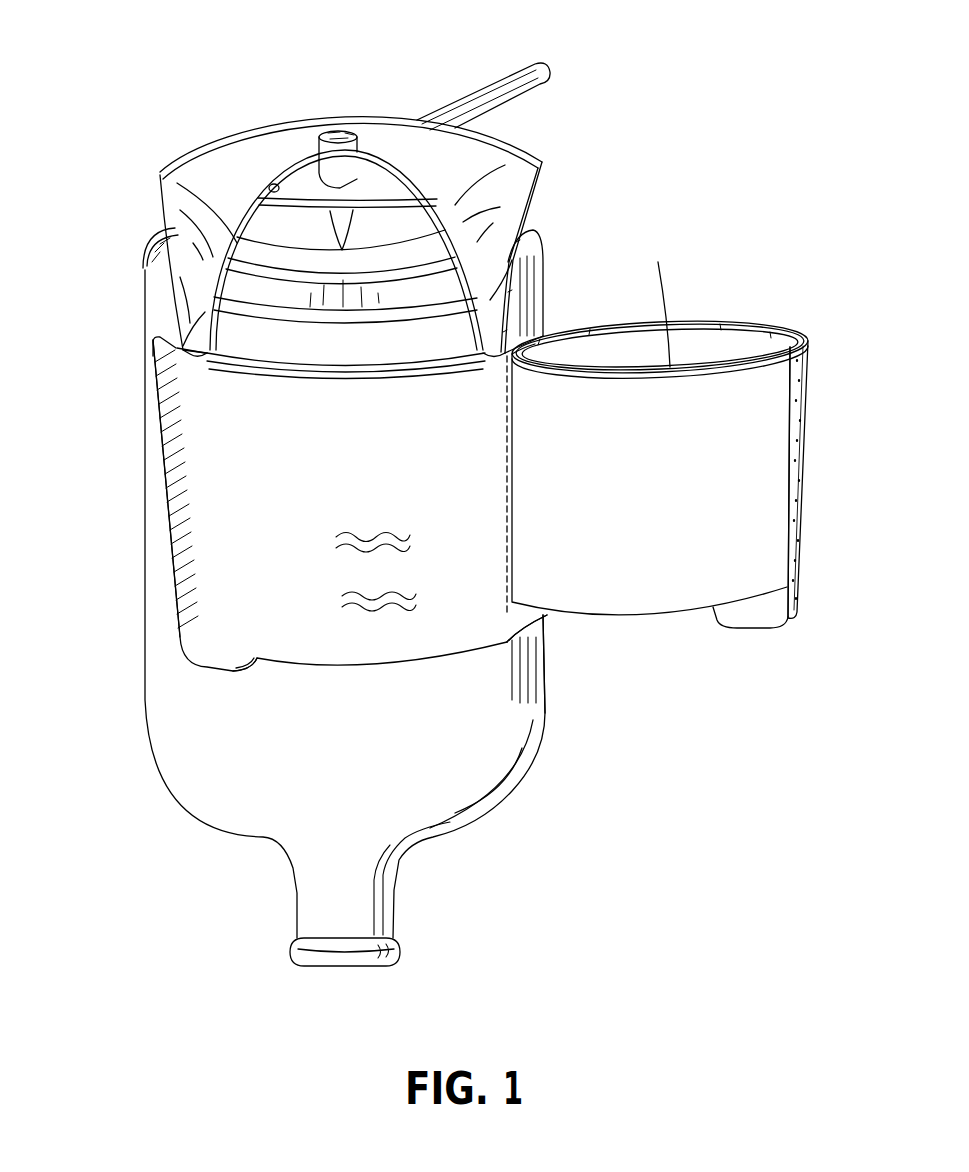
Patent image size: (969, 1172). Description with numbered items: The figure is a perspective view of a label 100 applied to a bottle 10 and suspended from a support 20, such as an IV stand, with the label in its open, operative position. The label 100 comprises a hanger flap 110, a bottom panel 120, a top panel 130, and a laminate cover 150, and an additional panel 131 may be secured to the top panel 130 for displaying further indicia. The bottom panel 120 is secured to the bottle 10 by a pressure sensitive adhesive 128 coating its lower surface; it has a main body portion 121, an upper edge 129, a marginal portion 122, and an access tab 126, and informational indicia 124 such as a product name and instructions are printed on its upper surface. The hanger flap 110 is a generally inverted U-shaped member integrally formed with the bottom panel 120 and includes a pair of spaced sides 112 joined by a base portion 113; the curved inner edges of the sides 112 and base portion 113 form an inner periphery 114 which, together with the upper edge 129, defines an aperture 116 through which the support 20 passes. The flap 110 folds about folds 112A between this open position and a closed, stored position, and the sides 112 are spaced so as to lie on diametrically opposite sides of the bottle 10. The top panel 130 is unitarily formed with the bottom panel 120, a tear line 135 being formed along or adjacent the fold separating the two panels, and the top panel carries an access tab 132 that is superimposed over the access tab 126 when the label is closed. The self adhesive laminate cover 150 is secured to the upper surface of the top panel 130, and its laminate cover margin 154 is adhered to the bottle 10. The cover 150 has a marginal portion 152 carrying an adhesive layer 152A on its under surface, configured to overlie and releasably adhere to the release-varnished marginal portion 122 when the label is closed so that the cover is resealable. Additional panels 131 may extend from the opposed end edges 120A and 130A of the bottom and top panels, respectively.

The bottle 10 is at (360, 846).
The support 20 is at (524, 76).
The label 100 is at (577, 732).
The hanger flap 110 is at (132, 222).
The sides 112 is at (190, 322).
The folds 112A is at (198, 352).
The base portion 113 is at (360, 133).
The inner periphery 114 is at (272, 185).
The opening or aperture 116 is at (429, 172).
The bottom panel 120 is at (363, 678).
The end edge of bottom panel 120A is at (170, 520).
The main body portion 121 is at (470, 547).
The marginal portion 122 is at (160, 355).
The informational indicia 124 is at (288, 484).
The access tab 126 is at (212, 664).
The pressure sensitive adhesive 128 is at (305, 365).
The upper edge 129 is at (246, 366).
The top panel 130 is at (645, 622).
The end edge of top panel 130A is at (798, 480).
The additional panels 131 is at (647, 322).
The access tab 132 is at (765, 617).
The tear line 135 is at (511, 637).
The laminate cover 150 is at (737, 325).
The marginal portion 152 is at (803, 342).
The adhesive layer 152A is at (805, 425).
The laminate cover margin 154 is at (522, 345).